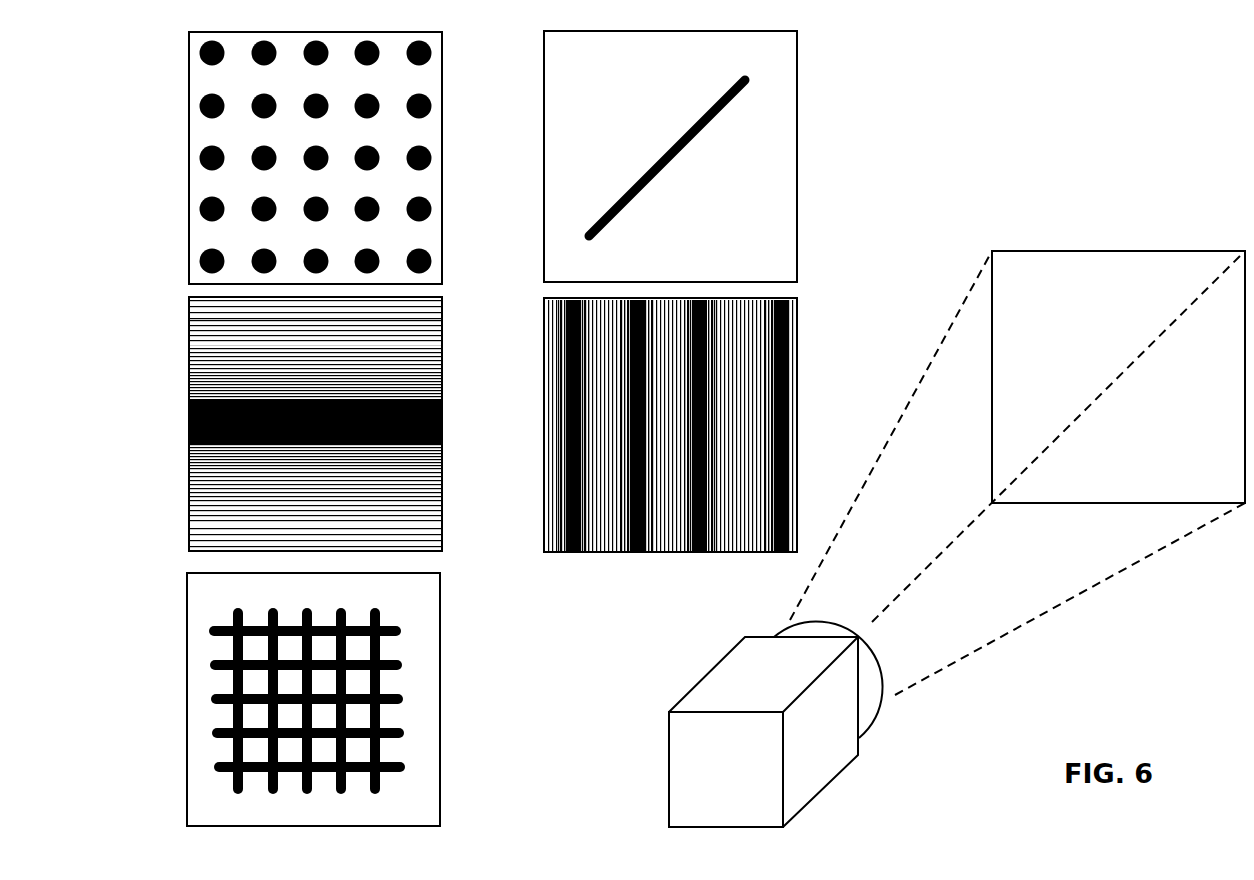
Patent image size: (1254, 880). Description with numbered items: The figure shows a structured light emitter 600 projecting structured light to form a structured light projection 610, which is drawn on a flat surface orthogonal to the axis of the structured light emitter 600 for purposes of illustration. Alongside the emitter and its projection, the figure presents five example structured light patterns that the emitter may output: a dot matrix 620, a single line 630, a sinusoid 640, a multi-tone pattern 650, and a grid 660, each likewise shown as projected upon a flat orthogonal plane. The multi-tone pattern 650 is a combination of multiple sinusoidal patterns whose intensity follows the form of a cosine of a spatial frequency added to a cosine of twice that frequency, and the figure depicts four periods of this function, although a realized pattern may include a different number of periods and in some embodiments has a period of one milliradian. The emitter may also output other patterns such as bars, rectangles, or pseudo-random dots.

The structured light emitter 600 is at (676, 682).
The structured light projection 610 is at (1077, 242).
The dot matrix 620 is at (452, 225).
The single line 630 is at (814, 210).
The sinusoid 640 is at (451, 488).
The multi-tone pattern 650 is at (807, 476).
The grid 660 is at (451, 733).